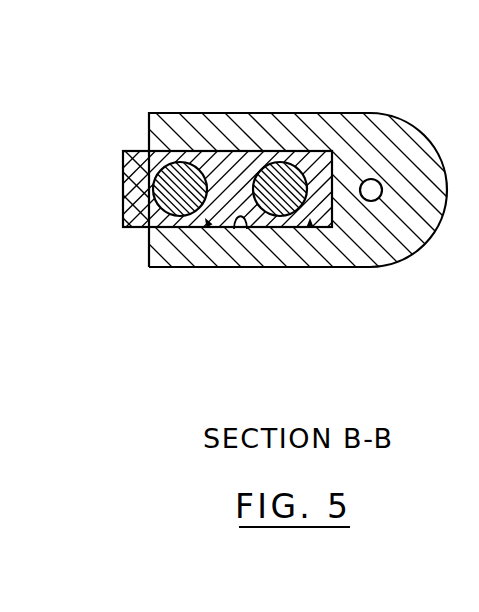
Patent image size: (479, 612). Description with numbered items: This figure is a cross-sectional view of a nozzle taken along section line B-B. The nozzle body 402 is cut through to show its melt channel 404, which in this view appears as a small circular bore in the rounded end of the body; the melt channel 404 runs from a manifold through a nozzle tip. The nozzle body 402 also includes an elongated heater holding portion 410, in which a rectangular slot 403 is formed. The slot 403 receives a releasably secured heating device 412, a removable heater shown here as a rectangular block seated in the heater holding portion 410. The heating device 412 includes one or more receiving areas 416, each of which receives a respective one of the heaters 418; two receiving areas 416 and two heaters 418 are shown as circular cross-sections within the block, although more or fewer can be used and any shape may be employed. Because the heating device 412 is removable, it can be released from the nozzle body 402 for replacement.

The nozzle body 402 is at (371, 248).
The slot 403 is at (247, 229).
The melt channel 404 is at (370, 179).
The heater holding portion 410 is at (176, 250).
The heating device 412 is at (99, 177).
The receiving areas 416 is at (208, 225).
The heaters 418 is at (193, 178).